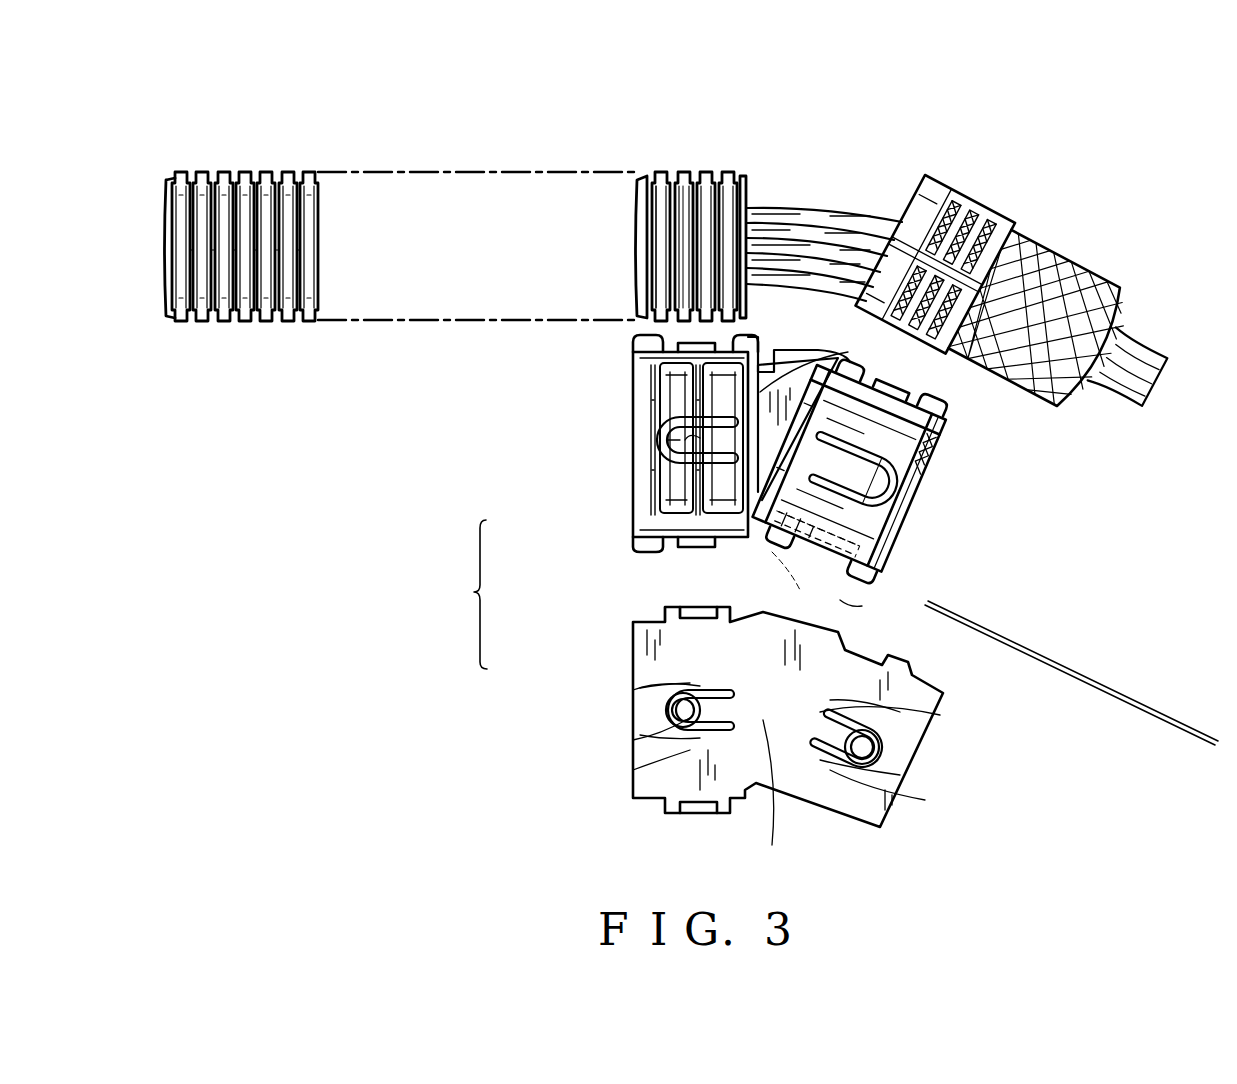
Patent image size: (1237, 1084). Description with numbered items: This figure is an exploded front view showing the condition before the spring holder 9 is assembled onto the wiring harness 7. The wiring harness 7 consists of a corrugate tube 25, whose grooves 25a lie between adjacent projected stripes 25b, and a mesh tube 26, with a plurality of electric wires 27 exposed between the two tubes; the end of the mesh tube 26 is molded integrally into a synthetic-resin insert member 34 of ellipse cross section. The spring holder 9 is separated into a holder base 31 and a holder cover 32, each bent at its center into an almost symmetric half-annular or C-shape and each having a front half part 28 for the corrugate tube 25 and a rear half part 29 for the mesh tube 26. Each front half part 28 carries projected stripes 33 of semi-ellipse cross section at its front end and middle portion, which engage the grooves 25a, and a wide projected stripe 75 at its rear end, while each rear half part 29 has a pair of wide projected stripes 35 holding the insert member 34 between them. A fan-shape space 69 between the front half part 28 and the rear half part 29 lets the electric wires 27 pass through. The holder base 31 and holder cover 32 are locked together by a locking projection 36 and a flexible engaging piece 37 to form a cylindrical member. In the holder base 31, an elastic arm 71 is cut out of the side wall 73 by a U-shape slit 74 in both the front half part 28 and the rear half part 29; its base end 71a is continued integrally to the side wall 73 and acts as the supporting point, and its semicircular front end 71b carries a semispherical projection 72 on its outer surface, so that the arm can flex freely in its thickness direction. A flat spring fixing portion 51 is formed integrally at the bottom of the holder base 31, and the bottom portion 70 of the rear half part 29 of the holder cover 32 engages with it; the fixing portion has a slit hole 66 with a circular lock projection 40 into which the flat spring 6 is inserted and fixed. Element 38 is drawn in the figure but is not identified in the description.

The flat spring 6 is at (1012, 632).
The wiring harness 7 is at (731, 163).
The spring holder 9 is at (470, 594).
The corrugate tube 25 is at (656, 172).
The grooves 25a is at (664, 172).
The projected stripes 25b is at (686, 172).
The mesh tube 26 is at (1055, 240).
The electric wires 27 is at (822, 210).
The front half part 28 is at (736, 332).
The rear half part 29 is at (920, 392).
The holder base 31 is at (615, 526).
The holder cover 32 is at (612, 666).
The projected stripes 33 is at (660, 405).
The insert member 34 is at (942, 190).
The wide projected stripes 35 is at (935, 445).
The locking projection 36 is at (692, 548).
The flexible engaging piece 37 is at (696, 815).
The lock tab 38 is at (642, 548).
The circular lock projection 40 is at (772, 560).
The flat spring fixing portion 51 is at (852, 604).
The slit hole 66 is at (880, 556).
The fan-shape space 69 is at (790, 368).
The bottom portion 70 is at (832, 822).
The elastic arm 71 is at (690, 420).
The base end 71a is at (660, 368).
The front end 71b is at (665, 440).
The semispherical projection 72 is at (668, 712).
The side wall 73 is at (762, 492).
The U-shape slit 74 is at (700, 478).
The wide projected stripe 75 is at (830, 380).